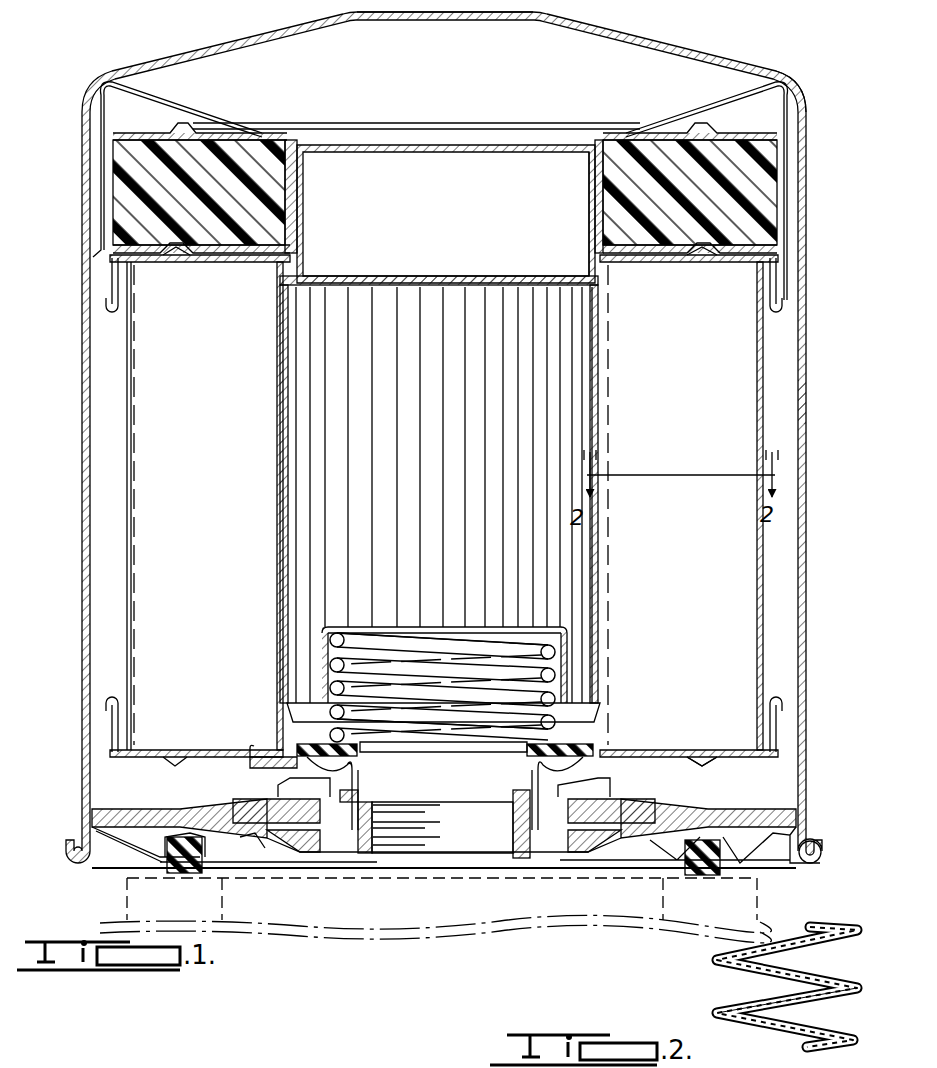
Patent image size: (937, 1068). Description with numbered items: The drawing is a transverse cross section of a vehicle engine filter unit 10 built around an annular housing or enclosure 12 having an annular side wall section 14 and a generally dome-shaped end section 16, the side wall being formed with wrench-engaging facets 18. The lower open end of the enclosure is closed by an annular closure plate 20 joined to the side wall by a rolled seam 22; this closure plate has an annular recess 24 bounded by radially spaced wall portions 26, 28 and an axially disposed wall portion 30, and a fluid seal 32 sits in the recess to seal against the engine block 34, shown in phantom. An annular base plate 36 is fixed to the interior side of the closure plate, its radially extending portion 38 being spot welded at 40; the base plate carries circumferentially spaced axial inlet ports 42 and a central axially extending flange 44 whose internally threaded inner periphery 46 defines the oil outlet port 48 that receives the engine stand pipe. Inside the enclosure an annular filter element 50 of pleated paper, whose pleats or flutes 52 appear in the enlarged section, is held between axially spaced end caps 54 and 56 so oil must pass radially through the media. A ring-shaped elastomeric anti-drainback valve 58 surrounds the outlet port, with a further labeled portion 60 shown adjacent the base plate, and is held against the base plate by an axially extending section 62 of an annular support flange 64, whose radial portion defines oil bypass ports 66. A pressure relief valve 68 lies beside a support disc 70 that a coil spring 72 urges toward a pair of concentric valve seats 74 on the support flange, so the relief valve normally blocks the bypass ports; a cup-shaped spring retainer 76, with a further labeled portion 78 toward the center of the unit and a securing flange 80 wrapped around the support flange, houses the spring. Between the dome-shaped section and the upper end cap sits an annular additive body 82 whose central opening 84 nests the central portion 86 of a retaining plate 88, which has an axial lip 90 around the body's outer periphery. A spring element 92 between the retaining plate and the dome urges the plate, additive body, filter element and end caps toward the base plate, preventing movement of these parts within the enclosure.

In FIG. 1, the filter unit 10 is at (483, 432).
In FIG. 1, the annular housing or enclosure 12 is at (801, 403).
In FIG. 1, the annular side wall section 14 is at (803, 466).
In FIG. 1, the dome-shaped end section 16 is at (676, 45).
In FIG. 1, the wrench-engaging faces or facets 18 is at (805, 134).
In FIG. 1, the annular closure plate 20 is at (773, 842).
In FIG. 1, the rolled seam 22 is at (821, 852).
In FIG. 1, the annular recess 24 is at (720, 837).
In FIG. 1, the radially spaced wall portion 26 is at (740, 893).
In FIG. 1, the radially spaced wall portion 28 is at (768, 813).
In FIG. 1, the axially disposed wall portion 30 is at (700, 833).
In FIG. 1, the fluid seal 32 is at (188, 880).
In FIG. 1, the engine block 34 is at (140, 872).
In FIG. 1, the annular base plate 36 is at (243, 840).
In FIG. 1, the radially extending portion 38 is at (145, 812).
In FIG. 1, the spot weld 40 is at (182, 832).
In FIG. 1, the inlet ports 42 is at (318, 850).
In FIG. 1, the central axially extending flange 44 is at (362, 805).
In FIG. 1, the internally threaded inner periphery 46 is at (383, 832).
In FIG. 1, the oil outlet port 48 is at (513, 820).
In FIG. 1, the annular filter element 50 is at (764, 370).
In FIG. 2, the annular filter element 50 is at (827, 1000).
In FIG. 2, the pleats or flutes 52 is at (857, 983).
In FIG. 1, the end cap 54 is at (748, 257).
In FIG. 1, the end cap 56 is at (746, 762).
In FIG. 1, the anti-drainback valve 58 is at (293, 818).
In FIG. 1, the hub plate 60 is at (350, 823).
In FIG. 1, the axially extending section 62 is at (357, 775).
In FIG. 1, the annular support flange 64 is at (527, 782).
In FIG. 1, the oil bypass ports 66 is at (560, 740).
In FIG. 1, the pressure relief valve 68 is at (350, 742).
In FIG. 1, the support disc or ring 70 is at (340, 747).
In FIG. 1, the coil spring 72 is at (313, 737).
In FIG. 1, the concentric valve seats 74 is at (607, 745).
In FIG. 1, the cup-shaped spring retainer 76 is at (572, 642).
In FIG. 1, the center tube 78 is at (533, 630).
In FIG. 1, the securing flange 80 is at (247, 773).
In FIG. 1, the annular additive body 82 is at (240, 240).
In FIG. 1, the central annular opening 84 is at (287, 178).
In FIG. 1, the central portion 86 is at (305, 197).
In FIG. 1, the retaining plate 88 is at (585, 193).
In FIG. 1, the annular lip 90 is at (113, 160).
In FIG. 1, the spring element 92 is at (207, 103).